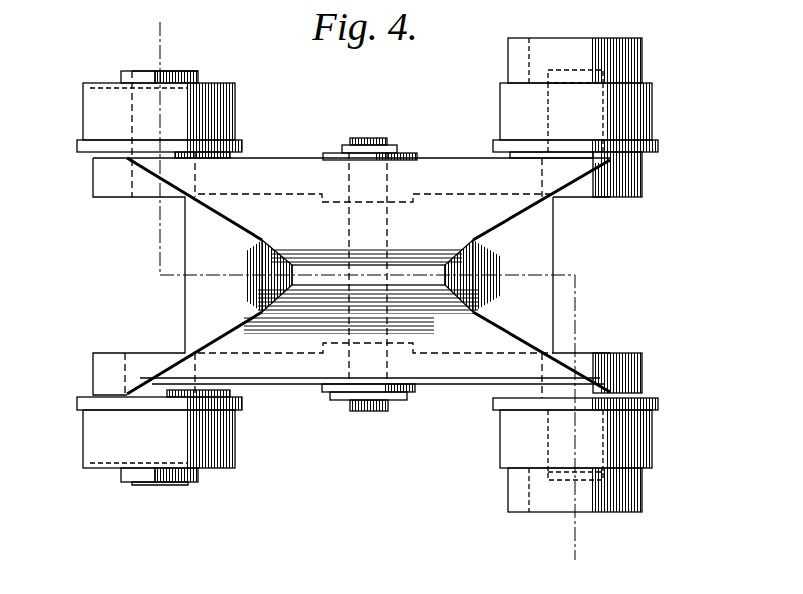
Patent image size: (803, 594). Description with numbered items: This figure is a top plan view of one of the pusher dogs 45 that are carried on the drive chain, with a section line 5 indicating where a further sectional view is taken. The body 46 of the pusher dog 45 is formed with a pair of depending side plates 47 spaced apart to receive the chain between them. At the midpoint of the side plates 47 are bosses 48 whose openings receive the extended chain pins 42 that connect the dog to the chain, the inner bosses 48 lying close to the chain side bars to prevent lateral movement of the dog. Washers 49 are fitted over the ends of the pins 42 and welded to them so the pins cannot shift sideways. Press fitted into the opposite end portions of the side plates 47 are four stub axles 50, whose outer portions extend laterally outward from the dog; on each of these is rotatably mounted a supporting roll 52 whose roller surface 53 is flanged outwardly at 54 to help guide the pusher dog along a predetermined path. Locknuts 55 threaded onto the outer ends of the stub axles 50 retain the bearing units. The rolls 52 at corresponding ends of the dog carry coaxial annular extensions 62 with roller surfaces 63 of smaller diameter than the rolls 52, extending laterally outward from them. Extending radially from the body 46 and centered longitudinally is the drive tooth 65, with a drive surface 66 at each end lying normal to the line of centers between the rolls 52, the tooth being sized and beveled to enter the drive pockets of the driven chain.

The section line 5- 5 is at (133, 42).
The extended chain pin 42 is at (368, 138).
The pusher dog 45 is at (447, 158).
The body 46 is at (553, 238).
The side plate 47 is at (595, 190).
The boss 48 is at (323, 154).
The washer 49 is at (340, 150).
The stub axle 50 is at (175, 71).
The supporting roll 52 is at (100, 113).
The roller surface 53 is at (83, 92).
The flange 54 is at (77, 145).
The locknut 55 is at (125, 70).
The annular extension 62 is at (570, 38).
The roller surface of extension 63 is at (642, 60).
The drive tooth 65 is at (400, 266).
The drive surface 66 is at (268, 260).